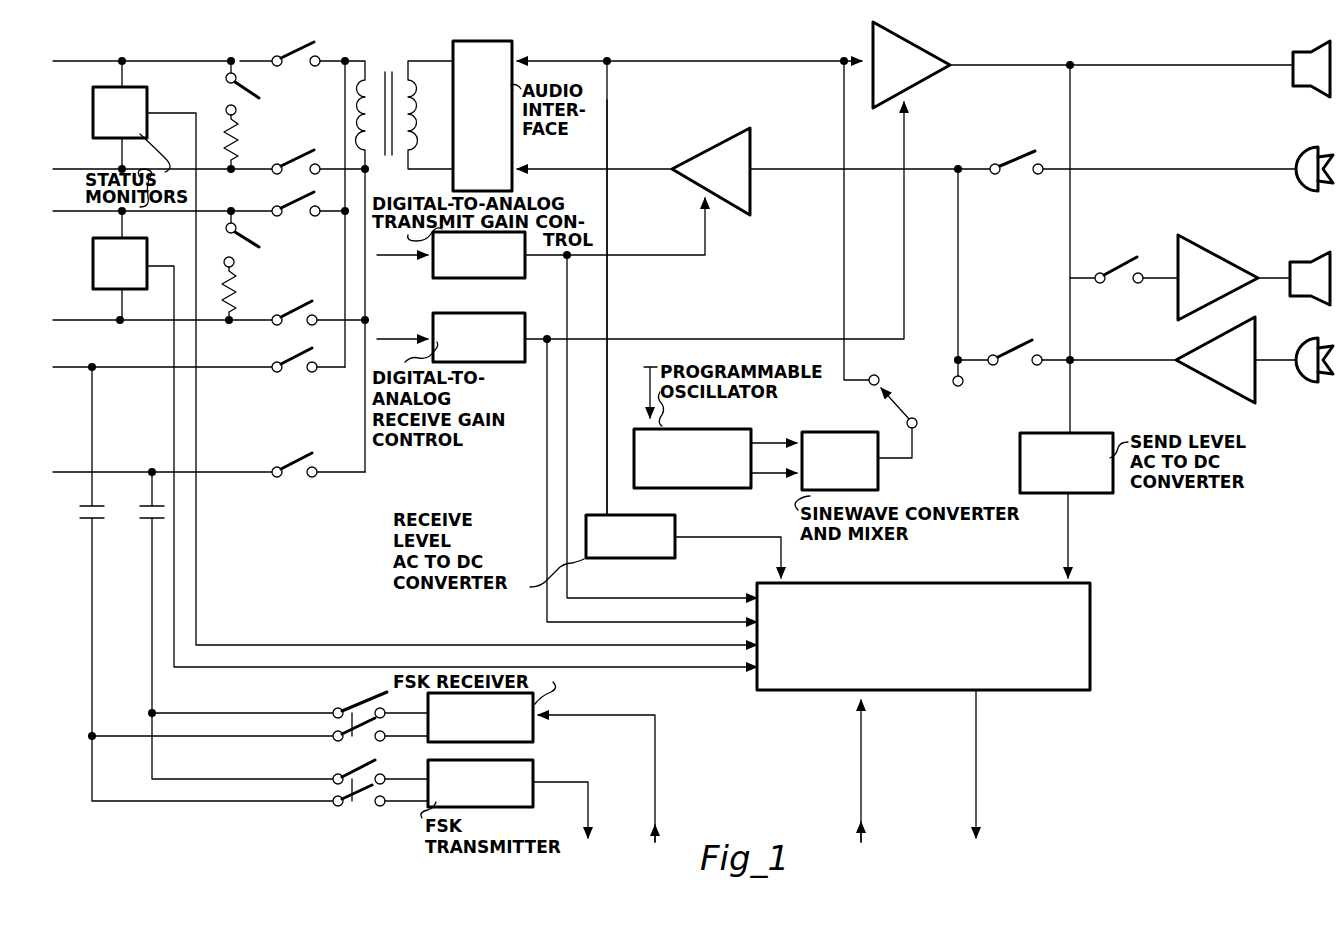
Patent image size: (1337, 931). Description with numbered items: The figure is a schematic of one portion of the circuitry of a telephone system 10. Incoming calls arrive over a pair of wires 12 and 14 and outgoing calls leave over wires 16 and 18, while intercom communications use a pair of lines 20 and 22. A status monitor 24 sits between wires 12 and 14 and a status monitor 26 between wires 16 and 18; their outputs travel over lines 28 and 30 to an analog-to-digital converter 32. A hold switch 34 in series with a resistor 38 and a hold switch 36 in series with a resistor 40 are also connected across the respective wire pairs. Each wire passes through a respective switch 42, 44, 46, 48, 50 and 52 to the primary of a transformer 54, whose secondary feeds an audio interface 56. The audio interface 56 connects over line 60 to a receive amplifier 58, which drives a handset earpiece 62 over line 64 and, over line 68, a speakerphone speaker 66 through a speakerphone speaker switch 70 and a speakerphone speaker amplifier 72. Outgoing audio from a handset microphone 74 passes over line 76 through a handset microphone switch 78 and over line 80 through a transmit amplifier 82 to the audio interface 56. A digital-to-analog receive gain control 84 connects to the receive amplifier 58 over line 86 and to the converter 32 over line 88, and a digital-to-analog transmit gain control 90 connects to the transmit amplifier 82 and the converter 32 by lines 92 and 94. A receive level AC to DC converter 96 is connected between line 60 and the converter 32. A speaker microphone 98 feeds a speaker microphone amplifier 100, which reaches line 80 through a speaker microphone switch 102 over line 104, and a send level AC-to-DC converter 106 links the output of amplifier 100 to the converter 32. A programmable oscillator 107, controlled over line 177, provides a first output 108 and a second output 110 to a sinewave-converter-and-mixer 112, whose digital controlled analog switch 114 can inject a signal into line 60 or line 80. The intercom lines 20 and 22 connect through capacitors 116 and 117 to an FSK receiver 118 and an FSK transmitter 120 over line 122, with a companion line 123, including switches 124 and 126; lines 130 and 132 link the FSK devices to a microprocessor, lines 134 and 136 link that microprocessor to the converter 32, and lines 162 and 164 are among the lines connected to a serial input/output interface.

The telephone system 10 is at (567, 50).
The wire 12 is at (76, 60).
The wire 14 is at (78, 168).
The wire 16 is at (78, 211).
The wire 18 is at (80, 320).
The intercom line 20 is at (84, 367).
The intercom line 22 is at (84, 472).
The status monitor 24 is at (132, 126).
The status monitor 26 is at (132, 278).
The line 28 is at (196, 546).
The line 30 is at (174, 610).
The analog-to-digital converter 32 is at (932, 651).
The hold switch 34 is at (256, 94).
The hold switch 36 is at (254, 241).
The resistor 38 is at (238, 136).
The resistor 40 is at (231, 288).
The switch 42 is at (294, 58).
The switch 44 is at (298, 164).
The switch 46 is at (294, 210).
The switch 48 is at (296, 319).
The switch 50 is at (292, 364).
The switch 52 is at (290, 464).
The transformer 54 is at (390, 66).
The audio interface 56 is at (496, 128).
The receive amplifier 58 is at (909, 79).
The line 60 is at (716, 64).
The handset earpiece 62 is at (1304, 50).
The line 64 is at (1118, 68).
The speakerphone speaker 66 is at (1308, 262).
The line 68 is at (1072, 143).
The speakerphone speaker switch 70 is at (1106, 274).
The speakerphone speaker amplifier 72 is at (1216, 292).
The telephone handset microphone 74 is at (1312, 154).
The line 76 is at (1186, 170).
The handset microphone switch 78 is at (1010, 162).
The line 80 is at (810, 172).
The transmit amplifier 82 is at (726, 182).
The digital-to-analog receive gain control 84 is at (491, 351).
The line 86 is at (694, 342).
The line 88 is at (544, 494).
The digital-to-analog transmit gain control 90 is at (491, 269).
The line 92 is at (660, 254).
The line 94 is at (560, 442).
The receive level AC to DC converter 96 is at (643, 552).
The telephone speaker microphone 98 is at (1310, 342).
The speaker microphone amplifier 100 is at (1221, 374).
The speaker microphone switch 102 is at (1008, 350).
The line 104 is at (956, 278).
The send level AC-to-DC converter 106 is at (1071, 476).
The programmable oscillator 107 is at (701, 471).
The first output 108 is at (774, 438).
The second output 110 is at (776, 480).
The sinewave-converter-and-mixer 112 is at (849, 473).
The digital controlled analog switch 114 is at (902, 396).
The capacitor 116 is at (145, 519).
The capacitor 117 is at (88, 524).
The FSK receiver 118 is at (490, 731).
The FSK transmitter 120 is at (490, 798).
The line 122 is at (149, 610).
The line 123 is at (84, 646).
The switch 124 is at (351, 712).
The switch 126 is at (350, 776).
The line 130 is at (578, 774).
The line 132 is at (585, 704).
The line 134 is at (856, 776).
The line 136 is at (968, 776).
The line 162 is at (398, 264).
The line 164 is at (392, 330).
The line 177 is at (646, 386).